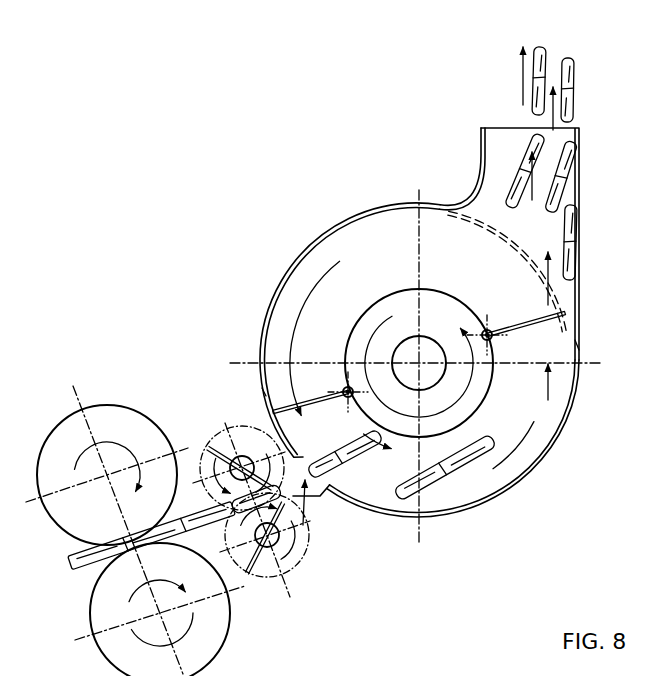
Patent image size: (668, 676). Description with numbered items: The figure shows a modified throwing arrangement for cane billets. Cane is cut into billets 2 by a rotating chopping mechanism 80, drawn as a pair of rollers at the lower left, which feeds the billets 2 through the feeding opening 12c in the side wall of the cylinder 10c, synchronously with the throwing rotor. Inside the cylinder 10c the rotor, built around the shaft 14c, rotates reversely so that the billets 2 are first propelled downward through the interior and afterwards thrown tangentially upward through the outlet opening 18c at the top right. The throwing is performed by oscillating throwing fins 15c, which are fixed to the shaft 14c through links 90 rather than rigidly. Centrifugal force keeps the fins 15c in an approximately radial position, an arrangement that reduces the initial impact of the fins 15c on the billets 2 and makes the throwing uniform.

The billets 2 is at (546, 72).
The cylinder 10c is at (537, 467).
The feeding opening 12c is at (302, 500).
The shaft 14c is at (407, 352).
The oscillating throwing fins 15c is at (283, 404).
The outlet opening 18c is at (511, 125).
The rotating chopping mechanism 80 is at (243, 442).
The links 90 is at (488, 329).